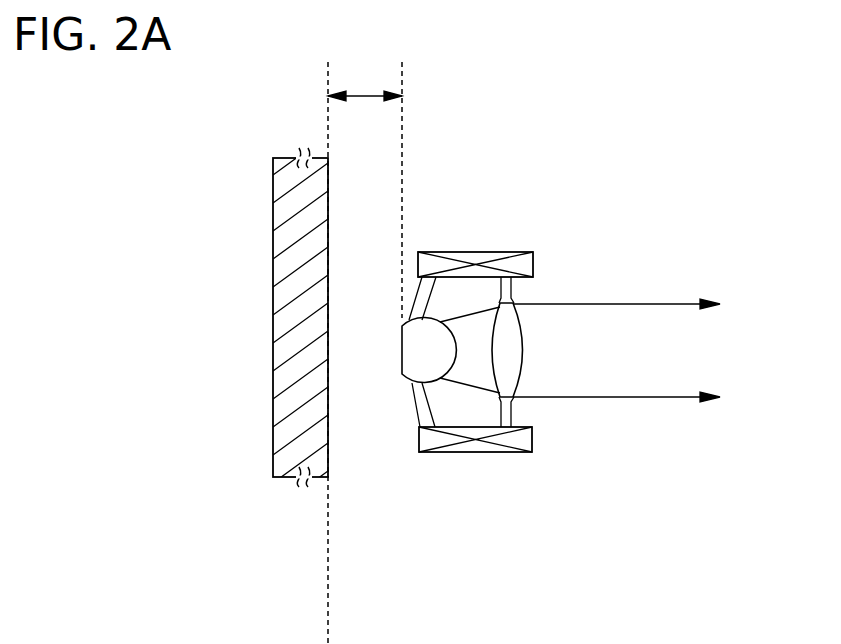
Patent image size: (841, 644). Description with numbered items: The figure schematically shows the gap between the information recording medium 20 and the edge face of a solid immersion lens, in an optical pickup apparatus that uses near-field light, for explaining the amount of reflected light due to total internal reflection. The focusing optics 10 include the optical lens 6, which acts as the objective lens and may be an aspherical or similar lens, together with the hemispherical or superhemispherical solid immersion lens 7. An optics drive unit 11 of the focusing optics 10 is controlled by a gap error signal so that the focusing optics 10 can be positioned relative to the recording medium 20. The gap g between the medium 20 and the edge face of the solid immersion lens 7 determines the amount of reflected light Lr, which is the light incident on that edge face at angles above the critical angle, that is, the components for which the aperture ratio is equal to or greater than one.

The information recording medium 20 is at (294, 479).
The focusing optics 10 is at (467, 366).
The optics drive unit 11 is at (468, 252).
The solid immersion lens 7 is at (412, 380).
The optical lens 6 is at (512, 360).
The gap g is at (355, 93).
The reflected light Lr is at (731, 288).